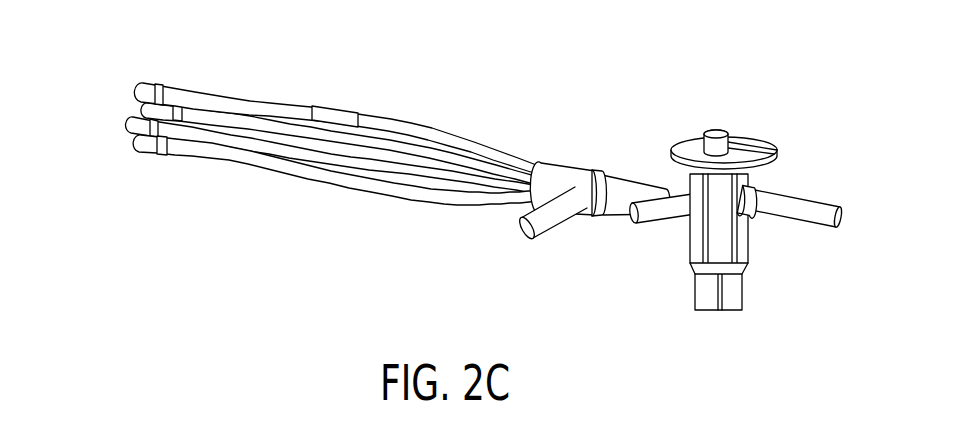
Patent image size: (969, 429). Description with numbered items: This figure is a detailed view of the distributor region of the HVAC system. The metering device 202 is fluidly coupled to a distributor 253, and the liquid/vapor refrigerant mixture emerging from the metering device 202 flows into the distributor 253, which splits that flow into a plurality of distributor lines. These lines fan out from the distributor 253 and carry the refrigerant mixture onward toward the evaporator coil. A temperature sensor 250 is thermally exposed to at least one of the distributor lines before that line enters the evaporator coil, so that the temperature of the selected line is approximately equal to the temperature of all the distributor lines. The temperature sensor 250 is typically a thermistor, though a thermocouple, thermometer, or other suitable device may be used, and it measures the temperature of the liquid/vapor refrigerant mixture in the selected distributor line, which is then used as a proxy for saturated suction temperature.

The temperature sensor 250 is at (333, 111).
The distributor 253 is at (557, 175).
The metering device 202 is at (743, 249).